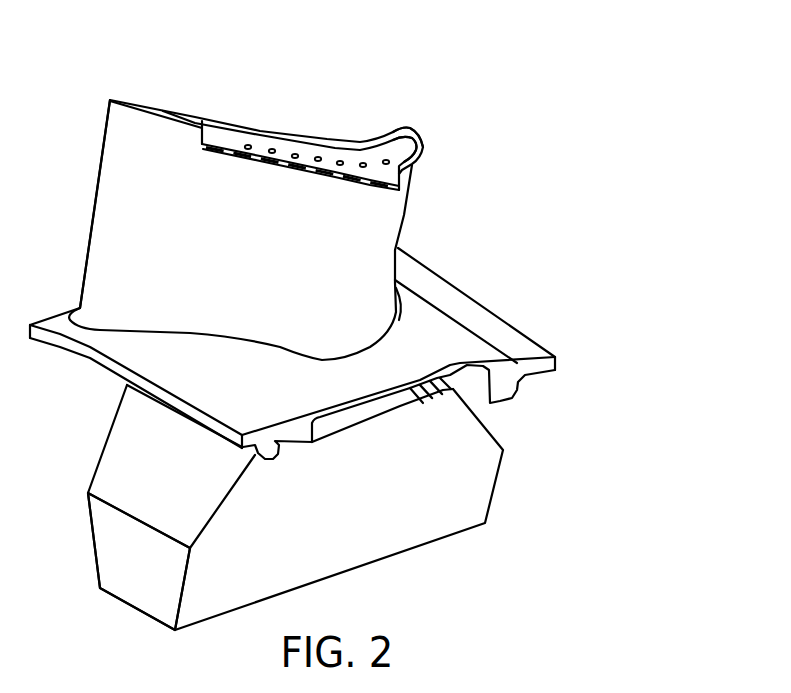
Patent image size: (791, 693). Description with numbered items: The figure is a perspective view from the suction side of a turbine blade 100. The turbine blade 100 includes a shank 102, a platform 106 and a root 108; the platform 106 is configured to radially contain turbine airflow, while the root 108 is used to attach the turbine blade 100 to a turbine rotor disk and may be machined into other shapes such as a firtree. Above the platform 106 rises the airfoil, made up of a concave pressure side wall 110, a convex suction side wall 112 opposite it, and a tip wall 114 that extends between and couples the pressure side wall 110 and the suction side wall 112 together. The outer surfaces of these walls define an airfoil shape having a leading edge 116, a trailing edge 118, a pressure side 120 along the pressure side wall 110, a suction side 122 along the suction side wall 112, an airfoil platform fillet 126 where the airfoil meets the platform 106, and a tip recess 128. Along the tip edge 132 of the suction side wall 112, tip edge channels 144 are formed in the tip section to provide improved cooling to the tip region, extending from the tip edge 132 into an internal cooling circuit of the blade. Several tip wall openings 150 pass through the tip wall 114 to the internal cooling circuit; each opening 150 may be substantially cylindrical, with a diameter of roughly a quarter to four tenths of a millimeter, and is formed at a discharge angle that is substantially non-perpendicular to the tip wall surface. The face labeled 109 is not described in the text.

The turbine blade 100 is at (522, 83).
The shank 102 is at (365, 410).
The platform 106 is at (123, 355).
The root 108 is at (127, 452).
The root face 109 is at (162, 578).
The pressure side wall 110 is at (337, 141).
The suction side wall 112 is at (313, 278).
The tip wall 114 is at (407, 148).
The leading edge 116 is at (412, 127).
The trailing edge 118 is at (97, 180).
The pressure side 120 is at (200, 118).
The suction side 122 is at (120, 243).
The airfoil platform fillet 126 is at (388, 333).
The tip recess 128 is at (247, 145).
The tip edge 132 is at (232, 152).
The tip edge channels 144 is at (307, 177).
The tip wall openings 150 is at (363, 160).